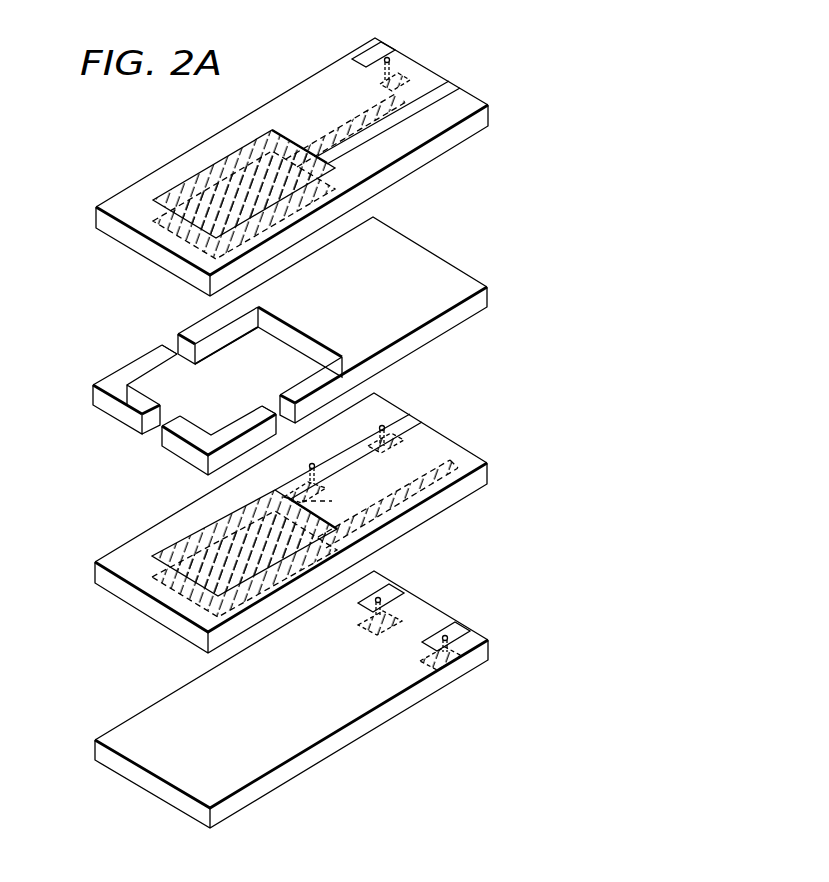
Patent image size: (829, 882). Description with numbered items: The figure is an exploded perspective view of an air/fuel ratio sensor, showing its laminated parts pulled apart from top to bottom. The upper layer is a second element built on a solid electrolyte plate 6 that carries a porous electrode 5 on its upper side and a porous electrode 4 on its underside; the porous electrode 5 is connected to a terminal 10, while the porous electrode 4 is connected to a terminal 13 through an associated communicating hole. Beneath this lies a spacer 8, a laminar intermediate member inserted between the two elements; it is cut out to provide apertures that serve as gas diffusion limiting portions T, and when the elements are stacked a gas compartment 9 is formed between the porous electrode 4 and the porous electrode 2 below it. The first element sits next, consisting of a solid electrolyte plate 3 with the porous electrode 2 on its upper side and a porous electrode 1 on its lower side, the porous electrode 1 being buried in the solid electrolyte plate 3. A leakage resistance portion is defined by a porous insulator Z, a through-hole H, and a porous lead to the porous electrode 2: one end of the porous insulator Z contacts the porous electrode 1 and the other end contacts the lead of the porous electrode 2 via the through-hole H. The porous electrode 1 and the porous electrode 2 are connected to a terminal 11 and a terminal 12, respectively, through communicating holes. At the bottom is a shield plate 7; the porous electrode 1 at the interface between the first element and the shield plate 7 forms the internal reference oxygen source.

The porous electrode 1 is at (172, 602).
The porous electrode 2 is at (178, 538).
The solid electrolyte plate 3 is at (95, 576).
The porous electrode 4 is at (185, 248).
The porous electrode 5 is at (208, 162).
The solid electrolyte plate 6 is at (96, 218).
The shield plate 7 is at (95, 752).
The spacer 8 is at (405, 250).
The gas compartment 9 is at (265, 362).
The terminal 10 is at (440, 98).
The terminal 11 is at (420, 665).
The terminal 12 is at (360, 632).
The terminal 13 is at (368, 70).
The gas diffusion limiting portion T is at (173, 344).
The through-hole H is at (318, 462).
The porous insulator Z is at (332, 501).